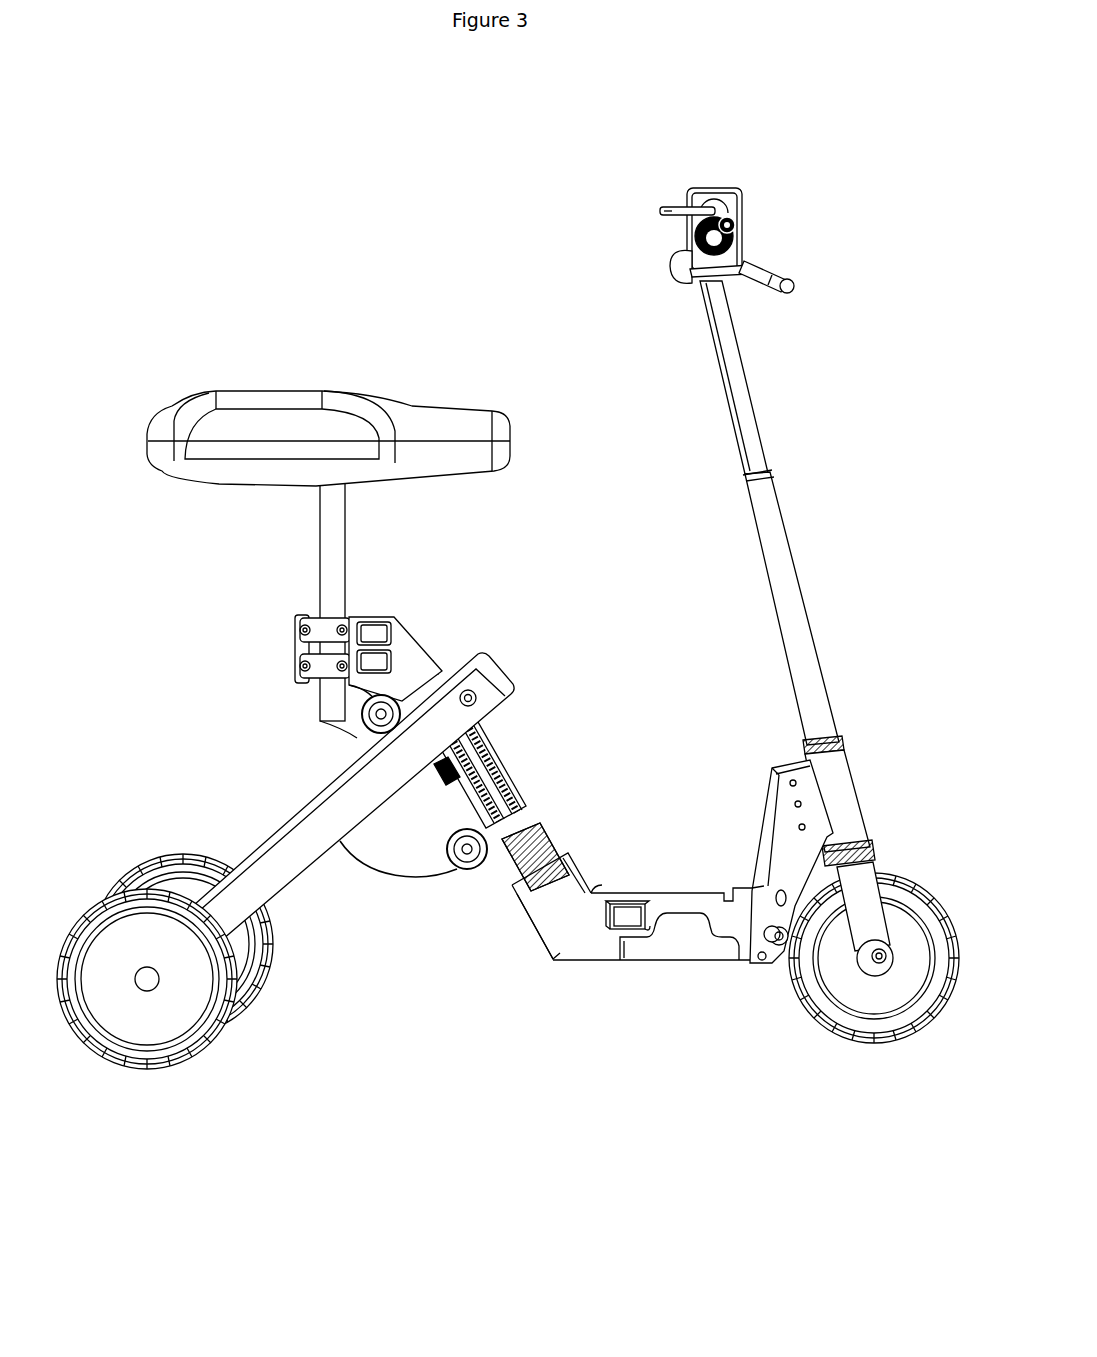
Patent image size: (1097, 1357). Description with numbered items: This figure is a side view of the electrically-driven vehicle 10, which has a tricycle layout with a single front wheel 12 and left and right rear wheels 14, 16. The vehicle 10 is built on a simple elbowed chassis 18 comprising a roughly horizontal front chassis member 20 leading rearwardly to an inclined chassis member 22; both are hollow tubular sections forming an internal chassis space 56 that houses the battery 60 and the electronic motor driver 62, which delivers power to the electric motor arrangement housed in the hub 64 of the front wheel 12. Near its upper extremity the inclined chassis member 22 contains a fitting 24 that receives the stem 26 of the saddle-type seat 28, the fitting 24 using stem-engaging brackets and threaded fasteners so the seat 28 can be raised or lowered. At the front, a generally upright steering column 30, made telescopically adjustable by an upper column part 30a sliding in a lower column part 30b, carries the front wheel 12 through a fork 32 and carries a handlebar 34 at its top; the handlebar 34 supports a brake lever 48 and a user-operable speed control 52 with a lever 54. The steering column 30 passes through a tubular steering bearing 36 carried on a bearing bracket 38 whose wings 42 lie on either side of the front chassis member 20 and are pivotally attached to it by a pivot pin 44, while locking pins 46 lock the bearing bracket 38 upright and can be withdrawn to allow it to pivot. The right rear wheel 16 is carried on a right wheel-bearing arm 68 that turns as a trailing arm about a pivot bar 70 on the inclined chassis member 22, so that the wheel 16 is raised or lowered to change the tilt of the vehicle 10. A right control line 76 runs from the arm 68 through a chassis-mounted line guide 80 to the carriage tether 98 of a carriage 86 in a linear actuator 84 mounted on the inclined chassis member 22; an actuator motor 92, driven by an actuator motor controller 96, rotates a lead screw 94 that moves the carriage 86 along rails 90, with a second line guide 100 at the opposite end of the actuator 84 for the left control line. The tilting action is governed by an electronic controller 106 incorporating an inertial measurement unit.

The vehicle 10 is at (551, 1160).
The front wheel 12 is at (931, 1008).
The left rear wheel 14 is at (263, 969).
The right rear wheel 16 is at (200, 1050).
The chassis 18 is at (604, 797).
The front chassis member 20 is at (678, 890).
The inclined chassis member 22 is at (410, 637).
The fitting 24 is at (298, 665).
The stem 26 is at (345, 553).
The seat 28 is at (405, 402).
The steering column 30 is at (826, 477).
The upper column part 30a is at (751, 380).
The lower column part 30b is at (809, 609).
The fork 32 is at (873, 861).
The handlebar 34 is at (735, 232).
The steering bearing 36 is at (849, 776).
The bearing bracket 38 is at (766, 752).
The wings 42 is at (772, 840).
The pivot pin 44 is at (757, 959).
The locking pins 46 is at (777, 944).
The brake lever 48 is at (788, 287).
The speed control 52 is at (752, 192).
The lever 54 is at (670, 207).
The internal chassis space 56 is at (532, 926).
The battery 60 is at (636, 962).
The motor driver 62 is at (626, 902).
The hub 64 is at (862, 992).
The right wheel-bearing arm 68 is at (288, 881).
The pivot bar 70 is at (472, 694).
The right control line 76 is at (411, 872).
The chassis-mounted line guide 80 is at (448, 841).
The linear actuator 84 is at (517, 787).
The carriage 86 is at (454, 784).
The rails 90 is at (491, 760).
The actuator motor 92 is at (560, 957).
The lead screw 94 is at (510, 783).
The actuator motor controller 96 is at (420, 664).
The carriage tether 98 is at (436, 767).
The second line guide 100 is at (364, 724).
The electronic controller 106 is at (389, 619).